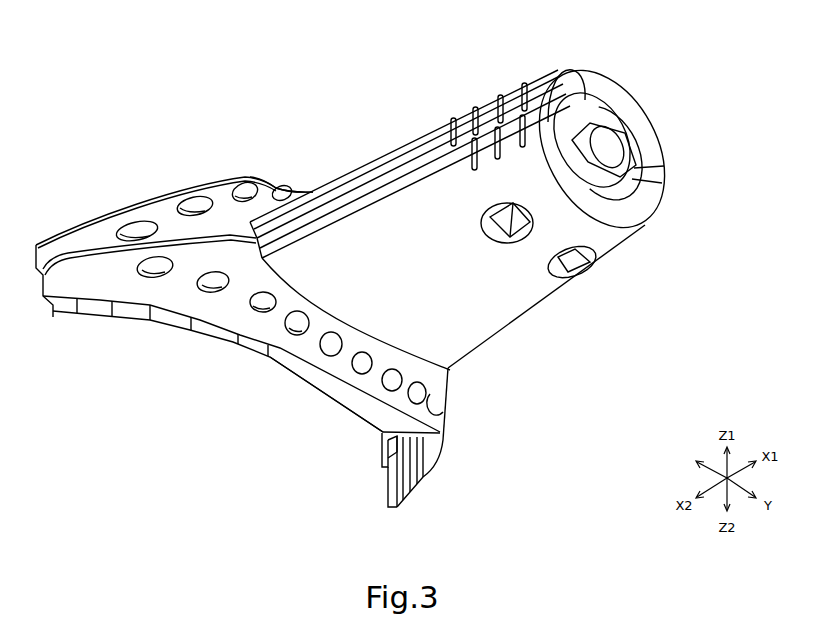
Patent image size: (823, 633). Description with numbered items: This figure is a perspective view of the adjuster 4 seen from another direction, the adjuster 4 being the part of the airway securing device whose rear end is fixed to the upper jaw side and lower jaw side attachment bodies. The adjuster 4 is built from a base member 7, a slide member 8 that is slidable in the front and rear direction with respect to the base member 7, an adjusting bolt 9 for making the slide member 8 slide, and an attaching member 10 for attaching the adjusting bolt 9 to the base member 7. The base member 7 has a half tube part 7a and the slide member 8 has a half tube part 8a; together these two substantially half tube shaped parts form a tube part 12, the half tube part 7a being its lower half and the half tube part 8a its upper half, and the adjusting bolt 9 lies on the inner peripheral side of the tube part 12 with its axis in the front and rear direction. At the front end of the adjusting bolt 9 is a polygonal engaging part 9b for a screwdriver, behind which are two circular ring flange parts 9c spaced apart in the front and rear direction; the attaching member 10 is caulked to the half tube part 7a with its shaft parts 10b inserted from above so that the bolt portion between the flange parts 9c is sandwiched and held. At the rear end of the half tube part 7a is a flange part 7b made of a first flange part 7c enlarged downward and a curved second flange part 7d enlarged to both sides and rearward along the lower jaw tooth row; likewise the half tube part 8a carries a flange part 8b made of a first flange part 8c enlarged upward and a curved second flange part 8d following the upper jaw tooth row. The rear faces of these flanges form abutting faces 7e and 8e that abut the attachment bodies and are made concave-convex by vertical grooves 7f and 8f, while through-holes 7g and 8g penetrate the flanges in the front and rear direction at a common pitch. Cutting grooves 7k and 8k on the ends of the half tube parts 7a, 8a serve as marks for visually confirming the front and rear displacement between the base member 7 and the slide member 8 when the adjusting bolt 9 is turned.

The adjuster 4 is at (148, 94).
The base member 7 is at (668, 195).
The half tube part 7a is at (412, 170).
The flange part 7b is at (300, 385).
The first flange part 7c is at (326, 394).
The second flange part 7d is at (62, 320).
The abutting face 7e is at (396, 500).
The grooves 7f is at (80, 320).
The through-holes 7g is at (176, 264).
The cutting grooves 7k is at (474, 178).
The slide member 8 is at (668, 153).
The half tube part 8a is at (368, 168).
The flange part 8b is at (300, 186).
The first flange part 8c is at (263, 182).
The second flange part 8d is at (72, 232).
The abutting face 8e is at (386, 452).
The grooves 8f is at (388, 442).
The through-holes 8g is at (137, 226).
The cutting grooves 8k is at (455, 124).
The adjusting bolt 9 is at (606, 130).
The engaging part 9b is at (604, 149).
The flange parts 9c is at (580, 98).
The attaching member 10 is at (577, 278).
The shaft parts 10b is at (495, 244).
The tube part 12 is at (413, 122).